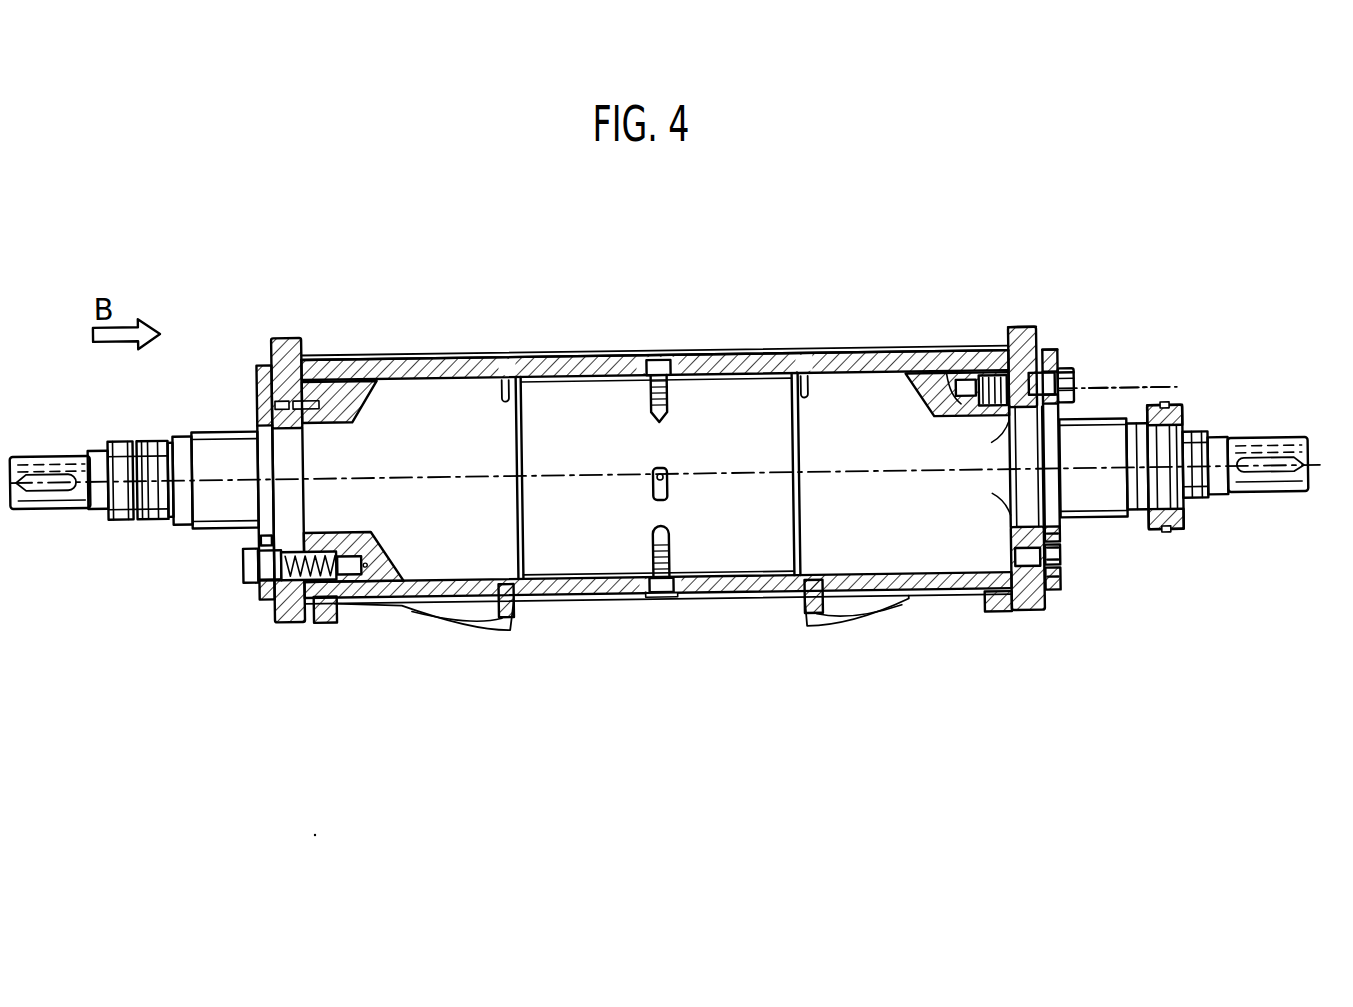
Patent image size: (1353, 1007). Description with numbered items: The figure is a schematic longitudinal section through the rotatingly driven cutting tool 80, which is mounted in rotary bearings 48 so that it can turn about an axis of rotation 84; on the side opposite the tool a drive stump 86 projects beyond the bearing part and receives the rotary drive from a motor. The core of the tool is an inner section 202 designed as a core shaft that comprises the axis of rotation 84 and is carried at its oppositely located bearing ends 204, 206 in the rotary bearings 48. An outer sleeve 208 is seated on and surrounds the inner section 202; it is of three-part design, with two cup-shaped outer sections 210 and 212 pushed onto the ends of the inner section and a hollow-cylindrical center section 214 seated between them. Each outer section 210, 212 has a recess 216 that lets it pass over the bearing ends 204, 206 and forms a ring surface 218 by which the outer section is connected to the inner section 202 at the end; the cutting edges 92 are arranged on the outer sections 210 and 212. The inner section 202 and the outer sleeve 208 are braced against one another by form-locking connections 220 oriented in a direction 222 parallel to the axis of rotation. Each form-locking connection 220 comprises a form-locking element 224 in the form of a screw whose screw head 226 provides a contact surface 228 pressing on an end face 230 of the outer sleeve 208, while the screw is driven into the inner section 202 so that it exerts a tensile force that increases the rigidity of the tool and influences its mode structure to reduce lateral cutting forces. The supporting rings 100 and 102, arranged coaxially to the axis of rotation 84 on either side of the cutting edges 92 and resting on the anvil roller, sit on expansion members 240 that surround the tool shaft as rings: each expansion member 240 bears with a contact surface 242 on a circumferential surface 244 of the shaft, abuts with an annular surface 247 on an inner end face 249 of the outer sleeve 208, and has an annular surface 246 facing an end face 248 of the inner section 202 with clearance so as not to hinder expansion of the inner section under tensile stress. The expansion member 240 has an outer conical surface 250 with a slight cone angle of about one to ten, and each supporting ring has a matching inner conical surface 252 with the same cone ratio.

The rotary bearing 48 is at (1180, 390).
The cutting tool 80 is at (543, 304).
The axis of rotation 84 is at (222, 476).
The drive stump 86 is at (38, 502).
The cutting edge 92 is at (507, 600).
The supporting ring 100 is at (290, 313).
The supporting ring 102 is at (1056, 325).
The inner section 202 is at (713, 560).
The bearing end 204 is at (155, 515).
The bearing end 206 is at (1203, 515).
The outer sleeve 208 is at (855, 338).
The outer section 210 is at (357, 600).
The outer section 212 is at (910, 608).
The center section 214 is at (580, 600).
The recess 216 is at (1065, 539).
The ring surface 218 is at (1065, 573).
The form-locking connection 220 is at (1098, 365).
The direction 222 is at (1117, 394).
The form-locking element 224 is at (960, 380).
The screw head 226 is at (1072, 381).
The contact surface 228 is at (1063, 352).
The end face 230 is at (1065, 543).
The expansion member 240 is at (1033, 620).
The contact surface 242 is at (1017, 620).
The circumferential surface 244 is at (977, 599).
The annular surface 246 is at (1008, 372).
The annular surface 247 is at (1010, 522).
The end face 248 is at (1065, 528).
The inner end face 249 is at (1065, 575).
The outer conical surface 250 is at (1010, 438).
The inner conical surface 252 is at (1040, 332).